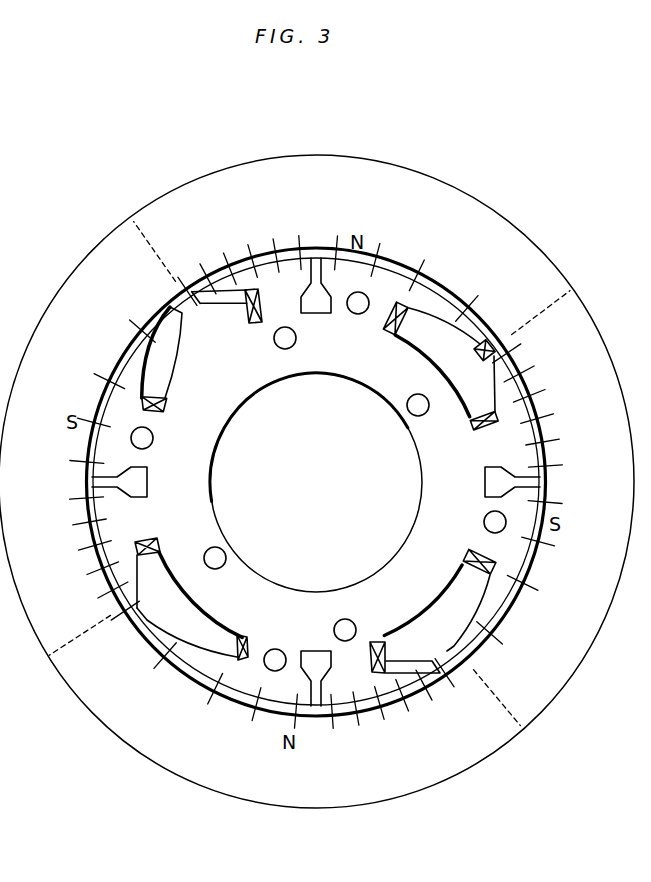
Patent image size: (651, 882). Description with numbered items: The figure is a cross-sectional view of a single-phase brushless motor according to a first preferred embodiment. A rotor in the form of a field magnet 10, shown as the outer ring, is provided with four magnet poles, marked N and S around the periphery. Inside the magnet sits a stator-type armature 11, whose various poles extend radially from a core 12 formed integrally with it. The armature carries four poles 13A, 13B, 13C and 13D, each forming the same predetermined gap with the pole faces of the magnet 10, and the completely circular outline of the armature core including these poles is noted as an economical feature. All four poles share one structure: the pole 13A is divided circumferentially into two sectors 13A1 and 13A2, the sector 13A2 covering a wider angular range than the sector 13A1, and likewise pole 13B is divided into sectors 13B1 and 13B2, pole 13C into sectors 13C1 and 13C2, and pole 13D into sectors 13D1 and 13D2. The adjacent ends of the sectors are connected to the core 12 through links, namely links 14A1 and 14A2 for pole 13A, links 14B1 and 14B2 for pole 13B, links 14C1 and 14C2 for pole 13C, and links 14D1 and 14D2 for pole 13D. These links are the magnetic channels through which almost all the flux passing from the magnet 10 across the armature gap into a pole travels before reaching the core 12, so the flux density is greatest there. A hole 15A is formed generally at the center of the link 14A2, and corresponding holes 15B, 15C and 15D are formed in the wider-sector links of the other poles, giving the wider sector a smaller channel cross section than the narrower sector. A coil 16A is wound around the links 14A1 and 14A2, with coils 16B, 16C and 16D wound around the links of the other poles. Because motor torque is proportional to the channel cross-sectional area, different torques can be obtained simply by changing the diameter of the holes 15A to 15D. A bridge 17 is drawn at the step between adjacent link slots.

The field magnet 10 is at (488, 211).
The stator-type armature 11 is at (293, 565).
The core 12 is at (468, 648).
The pole 13A is at (407, 257).
The sector 13A1 is at (248, 268).
The sector 13A2 is at (447, 300).
The pole 13B is at (547, 468).
The sector 13B1 is at (543, 412).
The sector 13B2 is at (525, 580).
The pole 13C is at (318, 718).
The sector 13C1 is at (390, 706).
The sector 13C2 is at (228, 690).
The pole 13D is at (88, 470).
The sector 13D1 is at (94, 540).
The sector 13D2 is at (128, 373).
The link 14A1 is at (244, 320).
The link 14A2 is at (422, 312).
The link 14B1 is at (490, 443).
The link 14B2 is at (478, 563).
The link 14C1 is at (382, 655).
The link 14C2 is at (256, 650).
The link 14D1 is at (152, 560).
The link 14D2 is at (165, 406).
The hole 15A is at (356, 315).
The hole 15B is at (484, 522).
The hole 15C is at (278, 649).
The hole 15D is at (152, 440).
The coil 16A is at (390, 336).
The coil 16B is at (473, 424).
The coil 16C is at (377, 641).
The coil 16D is at (152, 538).
The bridge 17 is at (497, 351).